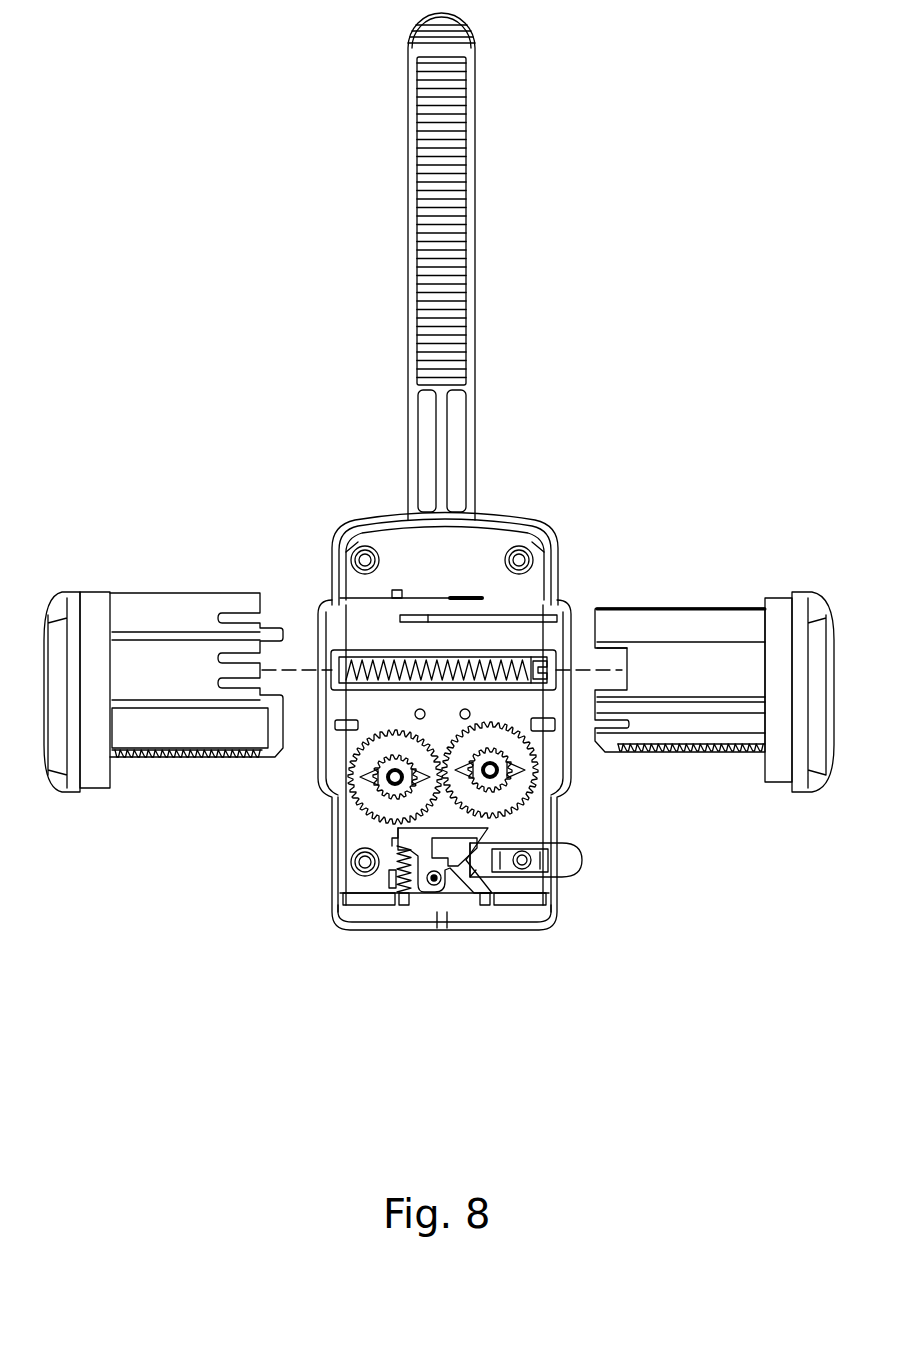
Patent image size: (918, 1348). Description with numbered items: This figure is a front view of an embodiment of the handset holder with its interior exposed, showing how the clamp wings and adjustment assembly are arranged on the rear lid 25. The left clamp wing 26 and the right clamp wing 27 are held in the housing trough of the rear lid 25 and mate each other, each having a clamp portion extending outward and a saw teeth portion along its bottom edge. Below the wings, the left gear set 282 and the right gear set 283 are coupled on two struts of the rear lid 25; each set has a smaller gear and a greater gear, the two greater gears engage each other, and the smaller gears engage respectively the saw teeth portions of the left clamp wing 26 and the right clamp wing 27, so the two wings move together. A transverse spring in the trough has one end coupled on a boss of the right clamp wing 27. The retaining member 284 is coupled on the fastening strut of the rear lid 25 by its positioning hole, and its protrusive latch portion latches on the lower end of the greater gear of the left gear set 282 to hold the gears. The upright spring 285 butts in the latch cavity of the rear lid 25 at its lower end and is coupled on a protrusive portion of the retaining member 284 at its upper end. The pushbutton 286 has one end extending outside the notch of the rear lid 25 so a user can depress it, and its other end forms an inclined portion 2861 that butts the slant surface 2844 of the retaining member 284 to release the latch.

The rear lid 25 is at (372, 530).
The left clamp wing 26 is at (156, 612).
The right clamp wing 27 is at (695, 625).
The left gear set 282 is at (348, 790).
The right gear set 283 is at (552, 792).
The retaining member 284 is at (455, 880).
The upright spring 285 is at (399, 878).
The pushbutton 286 is at (567, 878).
The slant surface 2844 is at (545, 845).
The inclined portion 2861 is at (470, 880).